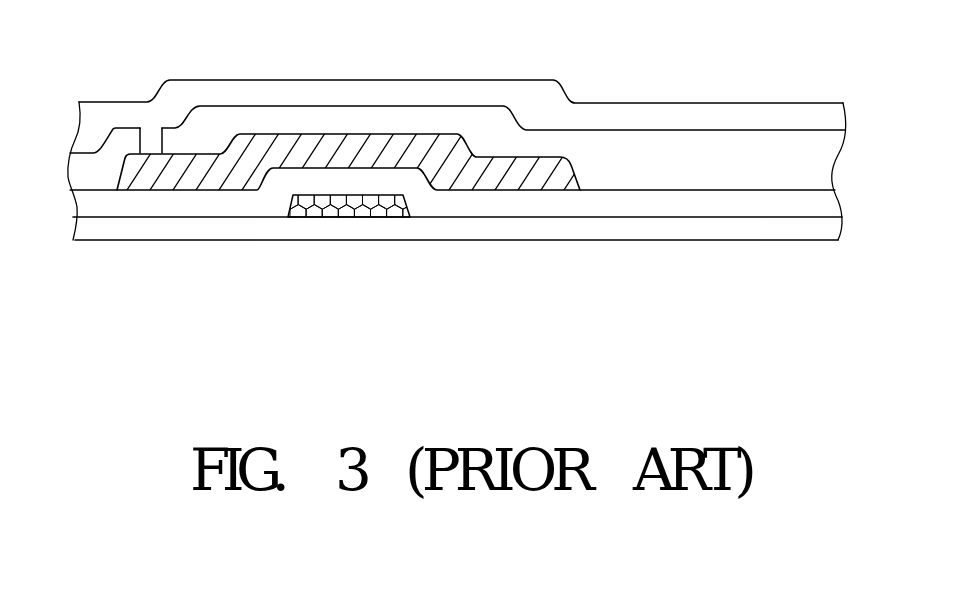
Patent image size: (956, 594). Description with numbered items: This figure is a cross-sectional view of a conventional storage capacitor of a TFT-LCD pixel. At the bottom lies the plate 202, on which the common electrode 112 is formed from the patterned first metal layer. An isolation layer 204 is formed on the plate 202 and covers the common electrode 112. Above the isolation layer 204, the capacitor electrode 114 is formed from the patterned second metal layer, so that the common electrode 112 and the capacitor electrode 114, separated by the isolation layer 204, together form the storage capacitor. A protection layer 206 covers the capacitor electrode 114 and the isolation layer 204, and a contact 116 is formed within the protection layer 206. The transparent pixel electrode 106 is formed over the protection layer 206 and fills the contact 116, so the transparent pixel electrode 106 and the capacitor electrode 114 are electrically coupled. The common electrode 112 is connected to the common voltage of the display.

The transparent pixel electrode 106 is at (652, 118).
The common electrode 112 is at (345, 218).
The capacitor electrode 114 is at (517, 172).
The contact 116 is at (158, 134).
The plate 202 is at (787, 230).
The isolation layer 204 is at (752, 203).
The protection layer 206 is at (124, 159).